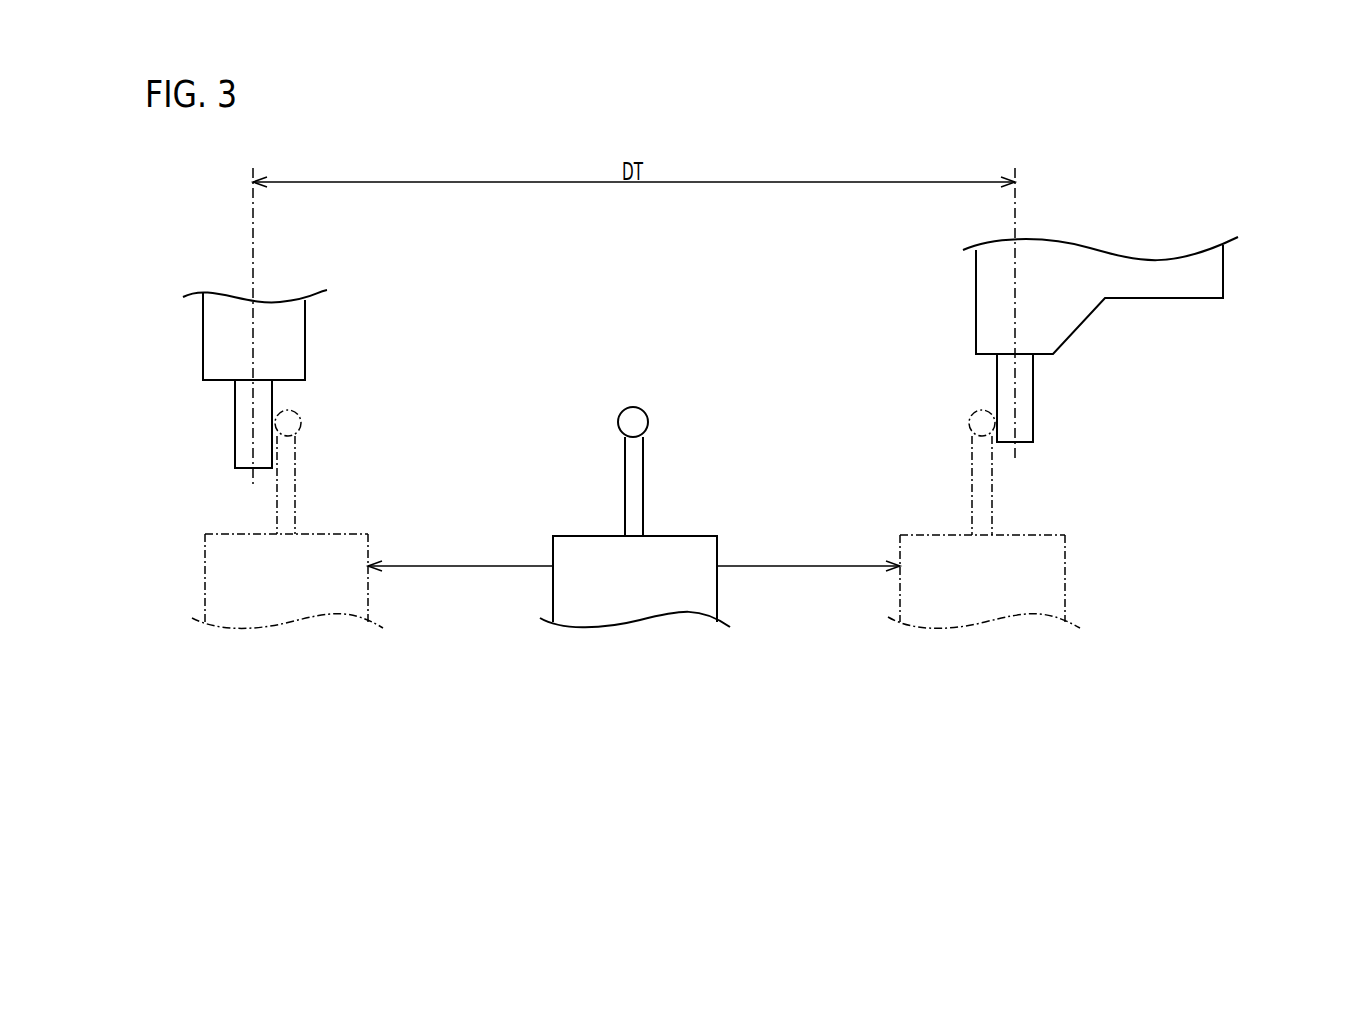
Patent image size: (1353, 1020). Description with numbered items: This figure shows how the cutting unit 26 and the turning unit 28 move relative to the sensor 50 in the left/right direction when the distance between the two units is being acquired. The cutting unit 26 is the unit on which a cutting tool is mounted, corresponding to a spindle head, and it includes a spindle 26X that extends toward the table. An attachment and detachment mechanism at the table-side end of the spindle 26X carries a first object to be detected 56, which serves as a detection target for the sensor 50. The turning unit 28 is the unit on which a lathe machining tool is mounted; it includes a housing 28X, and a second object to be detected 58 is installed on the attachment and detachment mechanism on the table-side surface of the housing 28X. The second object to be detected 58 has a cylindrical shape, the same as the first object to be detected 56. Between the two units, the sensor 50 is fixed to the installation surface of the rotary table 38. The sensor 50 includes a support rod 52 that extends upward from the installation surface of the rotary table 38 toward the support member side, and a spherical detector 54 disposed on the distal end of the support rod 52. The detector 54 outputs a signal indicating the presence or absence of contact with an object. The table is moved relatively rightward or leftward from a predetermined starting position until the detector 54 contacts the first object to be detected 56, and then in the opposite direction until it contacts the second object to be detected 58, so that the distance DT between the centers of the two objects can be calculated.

The cutting unit 26 is at (217, 379).
The spindle 26X is at (215, 336).
The first object to be detected 56 is at (243, 421).
The turning unit 28 is at (1131, 339).
The housing 28X is at (1178, 285).
The second object to be detected 58 is at (1028, 402).
The sensor 50 is at (634, 539).
The support rod 52 is at (633, 481).
The detector 54 is at (647, 422).
The rotary table 38 is at (674, 597).